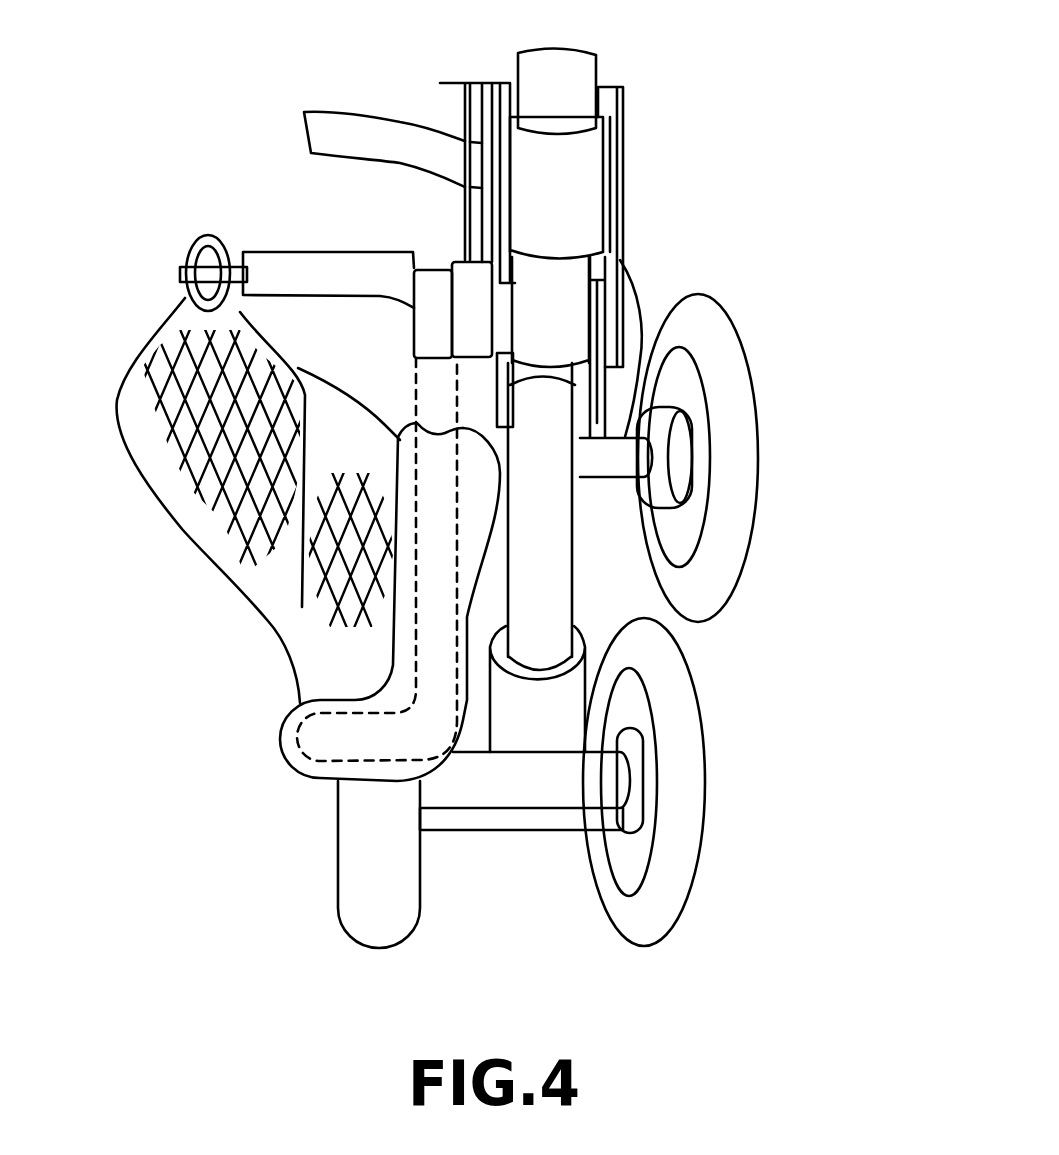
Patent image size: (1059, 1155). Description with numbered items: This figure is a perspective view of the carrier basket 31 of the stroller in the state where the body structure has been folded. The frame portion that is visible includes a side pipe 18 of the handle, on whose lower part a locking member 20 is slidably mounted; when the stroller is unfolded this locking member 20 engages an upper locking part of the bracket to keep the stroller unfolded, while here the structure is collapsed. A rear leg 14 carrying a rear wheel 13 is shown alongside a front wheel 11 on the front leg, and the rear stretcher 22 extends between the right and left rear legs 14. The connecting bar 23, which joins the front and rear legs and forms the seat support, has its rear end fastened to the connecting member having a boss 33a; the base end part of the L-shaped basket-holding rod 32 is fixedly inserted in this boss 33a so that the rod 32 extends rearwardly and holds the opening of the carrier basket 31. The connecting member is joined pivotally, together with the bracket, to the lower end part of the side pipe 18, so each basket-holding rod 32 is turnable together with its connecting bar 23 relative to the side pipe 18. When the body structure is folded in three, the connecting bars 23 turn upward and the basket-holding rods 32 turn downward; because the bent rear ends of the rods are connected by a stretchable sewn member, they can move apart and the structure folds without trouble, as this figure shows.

The front wheel 11 is at (747, 393).
The rear wheel 13 is at (686, 776).
The rear leg 14 is at (555, 590).
The side pipe 18 is at (570, 90).
The locking member 20 is at (580, 190).
The rear stretcher 22 is at (282, 262).
The connecting bar 23 is at (437, 206).
The carrier basket 31 is at (227, 530).
The basket-holding rod 32 is at (280, 731).
The boss 33a is at (440, 263).